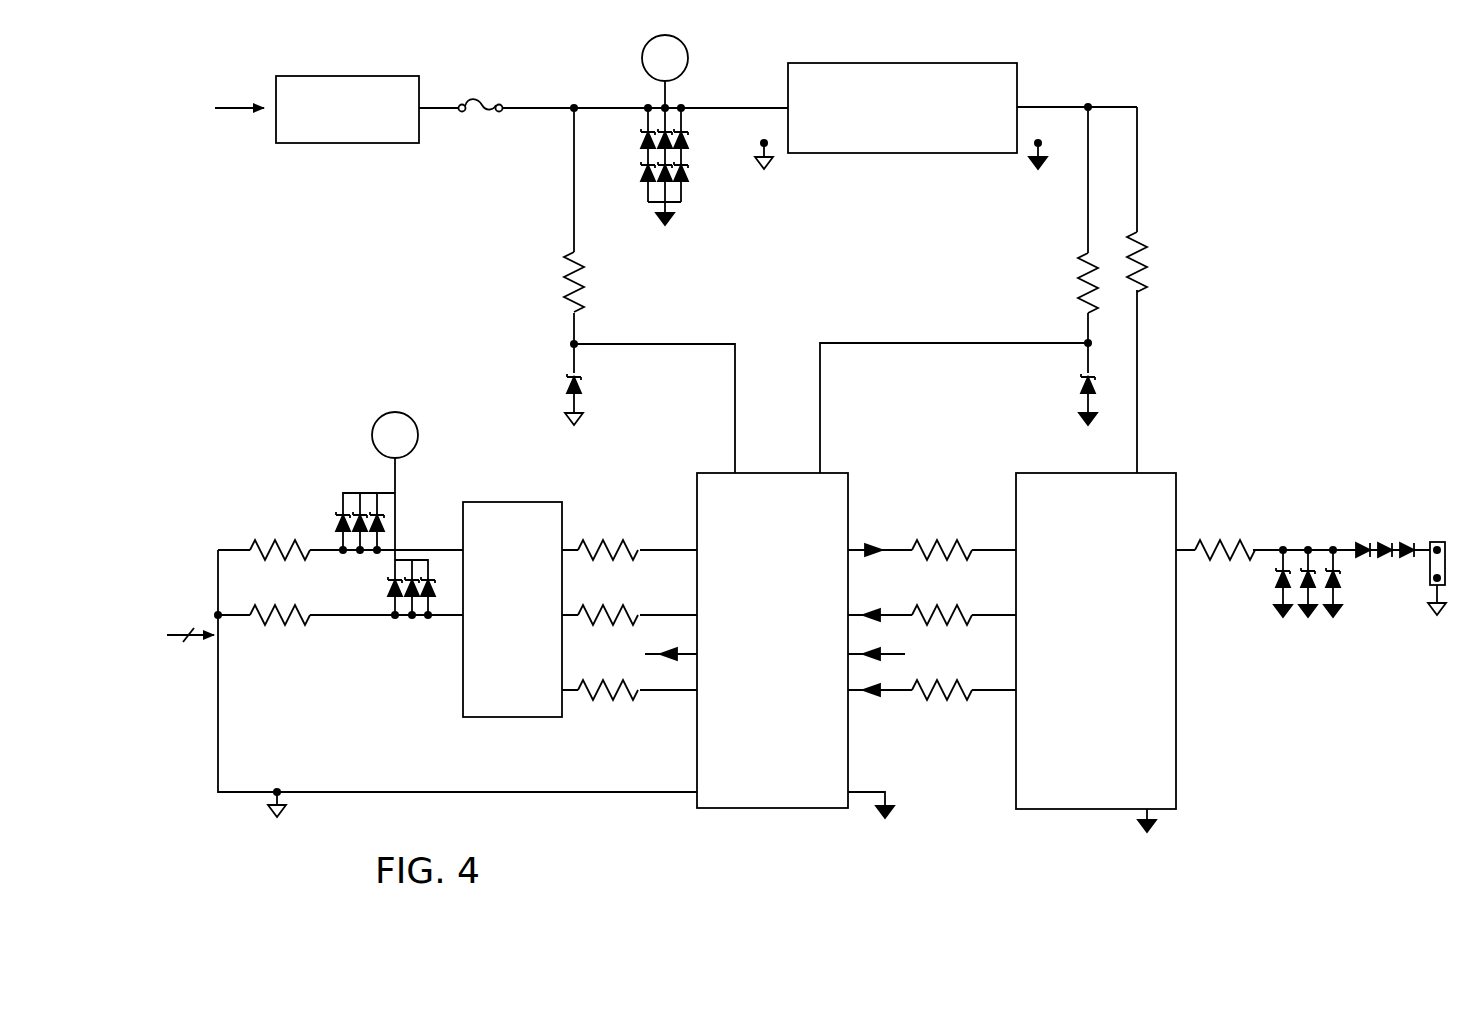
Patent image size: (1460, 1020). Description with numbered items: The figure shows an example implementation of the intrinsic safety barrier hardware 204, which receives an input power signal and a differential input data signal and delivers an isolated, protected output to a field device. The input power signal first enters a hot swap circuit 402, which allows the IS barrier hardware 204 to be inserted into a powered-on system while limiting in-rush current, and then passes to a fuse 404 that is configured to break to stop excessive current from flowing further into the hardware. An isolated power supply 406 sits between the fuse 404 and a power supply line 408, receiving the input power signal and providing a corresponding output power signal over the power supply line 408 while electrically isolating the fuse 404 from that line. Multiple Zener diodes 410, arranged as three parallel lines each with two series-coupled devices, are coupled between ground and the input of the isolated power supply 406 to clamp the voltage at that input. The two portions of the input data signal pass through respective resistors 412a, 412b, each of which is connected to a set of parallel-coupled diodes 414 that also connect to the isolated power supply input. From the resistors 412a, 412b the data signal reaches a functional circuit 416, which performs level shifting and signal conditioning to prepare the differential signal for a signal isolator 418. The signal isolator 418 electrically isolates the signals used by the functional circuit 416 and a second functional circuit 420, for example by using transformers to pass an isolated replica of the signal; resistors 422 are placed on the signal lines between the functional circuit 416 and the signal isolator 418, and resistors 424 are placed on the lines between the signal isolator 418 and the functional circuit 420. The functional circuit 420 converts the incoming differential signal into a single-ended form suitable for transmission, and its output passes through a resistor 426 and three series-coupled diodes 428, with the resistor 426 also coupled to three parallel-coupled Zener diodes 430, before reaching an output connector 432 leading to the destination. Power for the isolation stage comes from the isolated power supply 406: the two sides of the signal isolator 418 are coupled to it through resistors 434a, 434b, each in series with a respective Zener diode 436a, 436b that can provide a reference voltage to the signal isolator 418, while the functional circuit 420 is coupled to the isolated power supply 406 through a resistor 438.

The IS barrier hardware 204 is at (1278, 856).
The hot swap circuit 402 is at (322, 150).
The fuse 404 is at (487, 96).
The isolated power supply 406 is at (847, 158).
The power supply line 408 is at (1132, 98).
The Zener diodes 410 is at (690, 186).
The resistor 412a is at (266, 540).
The resistor 412b is at (274, 626).
The parallel-coupled diodes 414 is at (385, 598).
The functional circuit 416 is at (514, 498).
The signal isolator 418 is at (777, 470).
The functional circuit 420 is at (1010, 480).
The resistors 422 is at (596, 538).
The resistors 424 is at (928, 538).
The resistor 426 is at (1213, 540).
The diodes 428 is at (1367, 540).
The Zener diodes 430 is at (1272, 578).
The output connector 432 is at (1422, 578).
The resistor 434a is at (560, 298).
The resistor 434b is at (1078, 282).
The Zener diode 436a is at (560, 394).
The Zener diode 436b is at (1078, 392).
The resistor 438 is at (1152, 266).